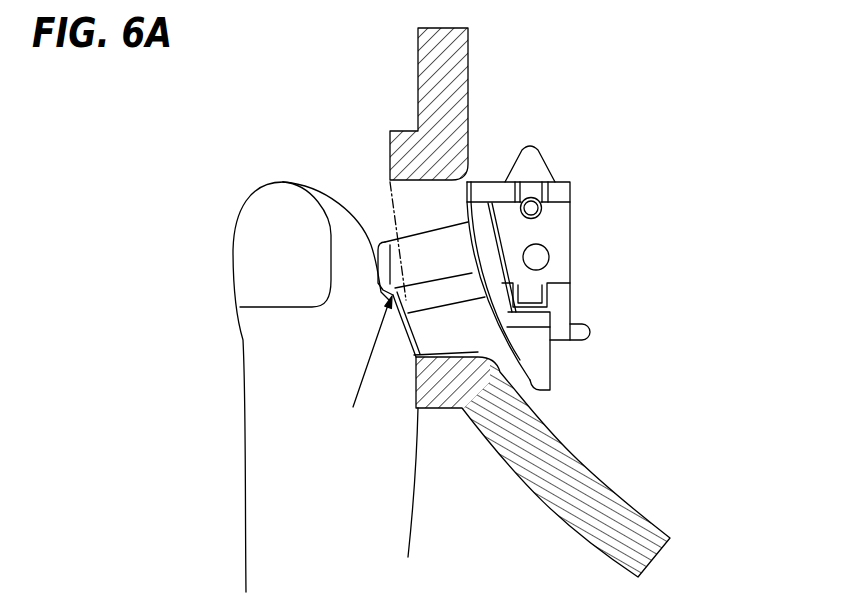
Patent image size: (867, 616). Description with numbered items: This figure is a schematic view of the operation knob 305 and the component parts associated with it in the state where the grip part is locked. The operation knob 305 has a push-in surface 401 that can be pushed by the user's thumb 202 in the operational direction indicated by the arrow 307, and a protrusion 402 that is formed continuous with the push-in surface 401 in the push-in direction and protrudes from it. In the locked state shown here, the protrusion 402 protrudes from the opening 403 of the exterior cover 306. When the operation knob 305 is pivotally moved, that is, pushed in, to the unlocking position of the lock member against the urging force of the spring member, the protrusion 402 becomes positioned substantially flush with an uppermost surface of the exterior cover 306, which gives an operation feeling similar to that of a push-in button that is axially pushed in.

The thumb 202 is at (275, 438).
The operation knob 305 is at (472, 335).
The exterior cover 306 is at (567, 527).
The arrow 307 is at (367, 363).
The push-in surface 401 is at (403, 288).
The protrusion 402 is at (383, 268).
The opening 403 is at (395, 206).